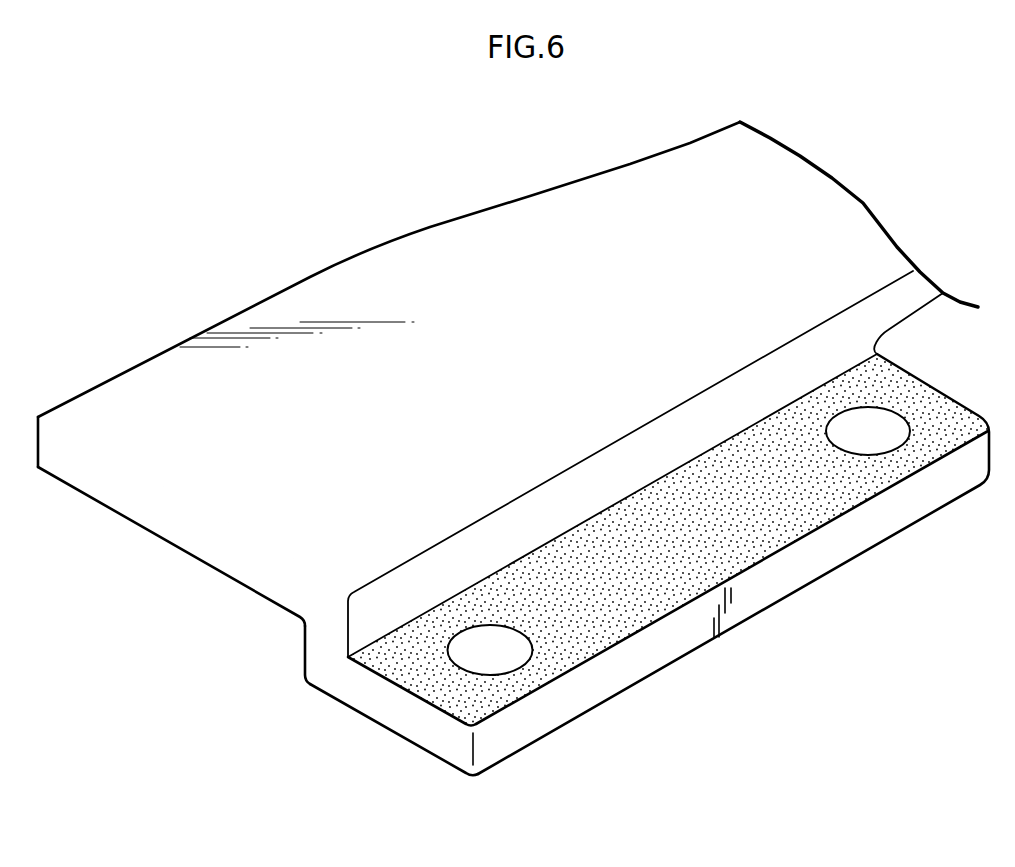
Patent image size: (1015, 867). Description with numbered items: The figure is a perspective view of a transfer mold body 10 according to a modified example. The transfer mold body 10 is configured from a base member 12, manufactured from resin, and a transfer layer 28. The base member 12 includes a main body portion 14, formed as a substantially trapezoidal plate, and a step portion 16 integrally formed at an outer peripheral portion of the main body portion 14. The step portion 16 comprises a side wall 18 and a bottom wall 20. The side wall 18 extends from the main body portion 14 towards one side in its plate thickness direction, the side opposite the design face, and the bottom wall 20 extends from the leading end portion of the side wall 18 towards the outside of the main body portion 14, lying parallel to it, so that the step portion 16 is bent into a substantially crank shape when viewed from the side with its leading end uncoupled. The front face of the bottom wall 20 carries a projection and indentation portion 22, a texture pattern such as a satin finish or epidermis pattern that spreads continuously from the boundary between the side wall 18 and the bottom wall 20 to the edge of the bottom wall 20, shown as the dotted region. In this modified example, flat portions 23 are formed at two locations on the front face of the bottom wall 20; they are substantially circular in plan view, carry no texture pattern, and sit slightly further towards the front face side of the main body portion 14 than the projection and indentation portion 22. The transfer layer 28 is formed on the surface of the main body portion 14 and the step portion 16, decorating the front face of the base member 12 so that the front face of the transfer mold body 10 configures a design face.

The transfer mold body 10 is at (513, 437).
The base member 12 is at (205, 568).
The main body portion 14 is at (98, 500).
The step portion 16 is at (350, 710).
The side wall 18 is at (302, 648).
The bottom wall 20 is at (597, 708).
The projection and indentation portion 22 is at (728, 555).
The flat portions 23 is at (497, 658).
The transfer layer 28 is at (840, 213).